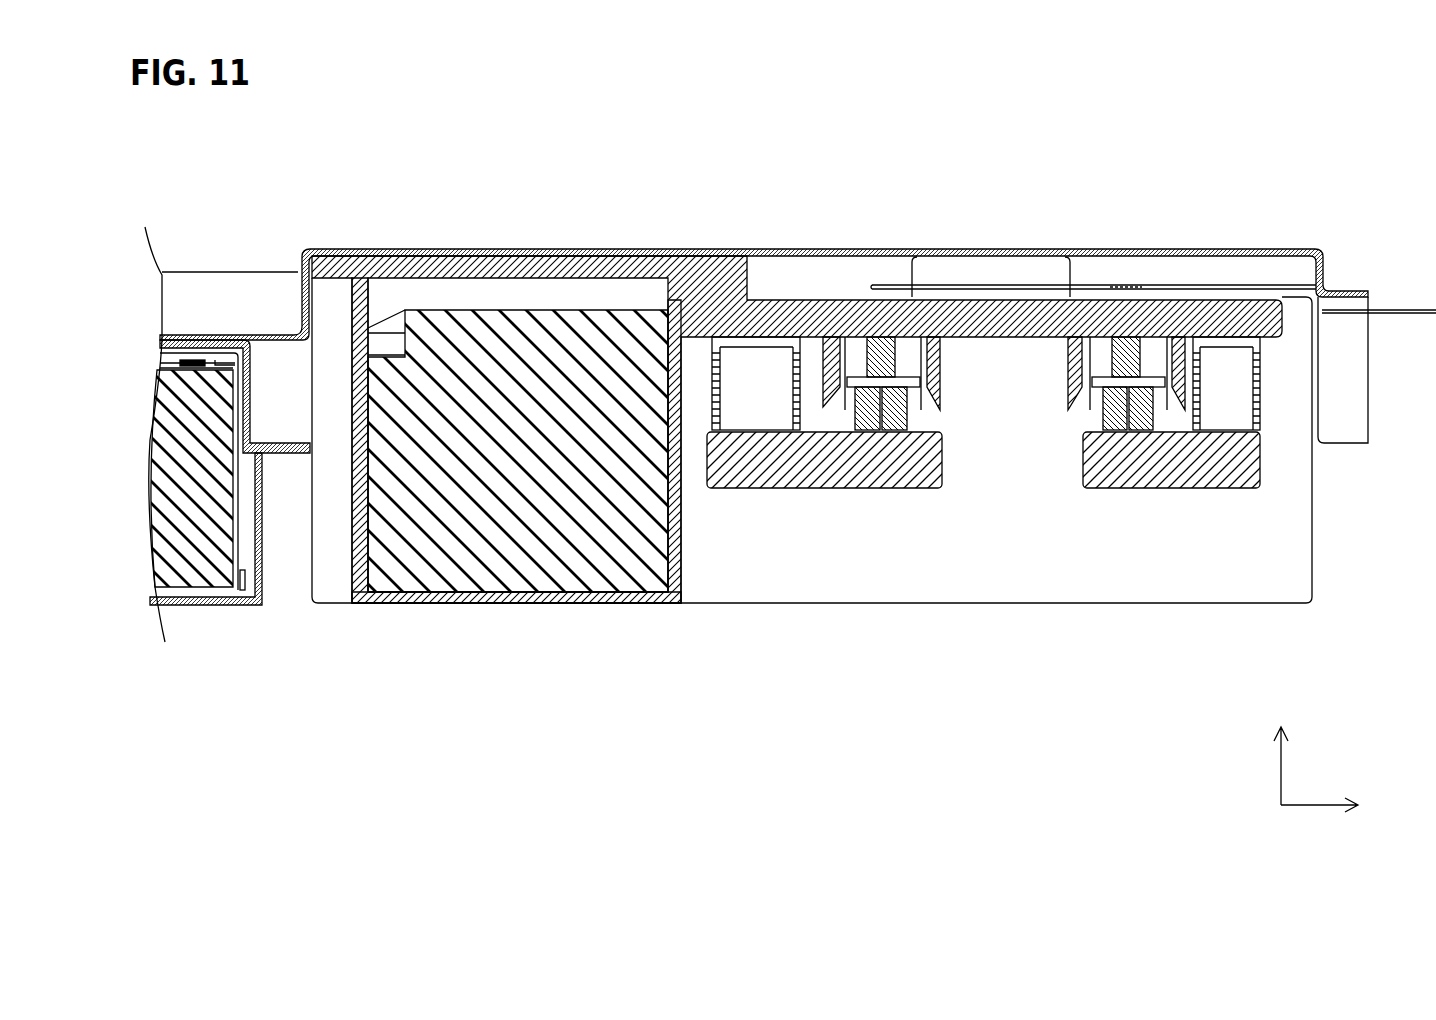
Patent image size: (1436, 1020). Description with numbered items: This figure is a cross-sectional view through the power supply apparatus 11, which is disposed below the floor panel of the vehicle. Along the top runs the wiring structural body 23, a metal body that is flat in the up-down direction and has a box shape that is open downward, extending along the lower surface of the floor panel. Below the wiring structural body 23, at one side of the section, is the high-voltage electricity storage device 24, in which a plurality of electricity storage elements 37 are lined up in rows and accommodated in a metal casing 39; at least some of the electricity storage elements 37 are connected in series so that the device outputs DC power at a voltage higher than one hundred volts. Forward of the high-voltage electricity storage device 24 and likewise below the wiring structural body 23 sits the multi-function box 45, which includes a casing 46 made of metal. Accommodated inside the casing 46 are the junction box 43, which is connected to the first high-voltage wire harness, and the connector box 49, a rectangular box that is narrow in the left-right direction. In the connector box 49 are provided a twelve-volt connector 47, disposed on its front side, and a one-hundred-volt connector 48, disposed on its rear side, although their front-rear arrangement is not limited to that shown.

The power supply apparatus 11 is at (1340, 212).
The wiring structural body 23 is at (302, 308).
The high-voltage electricity storage device 24 is at (182, 672).
The electricity storage element 37 is at (195, 560).
The metal casing 39 is at (258, 605).
The junction box 43 is at (515, 540).
The multi-function box 45 is at (603, 603).
The casing 46 is at (416, 603).
The 12-V connector 47 is at (1127, 357).
The 100-V connector 48 is at (880, 357).
The connector box 49 is at (928, 452).